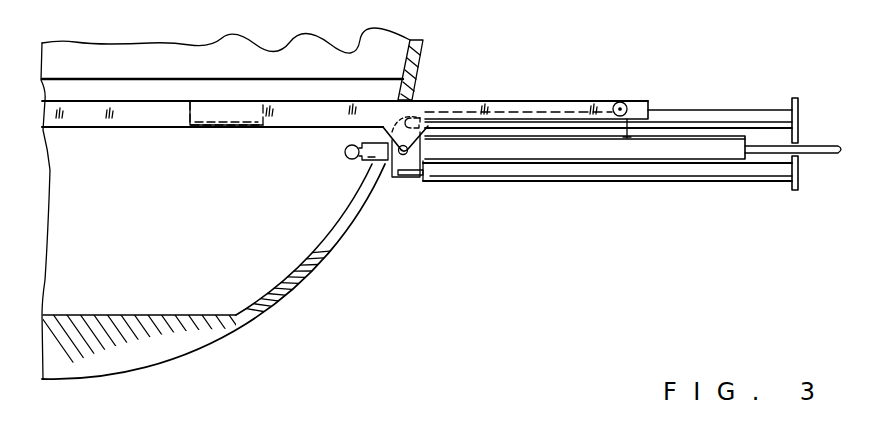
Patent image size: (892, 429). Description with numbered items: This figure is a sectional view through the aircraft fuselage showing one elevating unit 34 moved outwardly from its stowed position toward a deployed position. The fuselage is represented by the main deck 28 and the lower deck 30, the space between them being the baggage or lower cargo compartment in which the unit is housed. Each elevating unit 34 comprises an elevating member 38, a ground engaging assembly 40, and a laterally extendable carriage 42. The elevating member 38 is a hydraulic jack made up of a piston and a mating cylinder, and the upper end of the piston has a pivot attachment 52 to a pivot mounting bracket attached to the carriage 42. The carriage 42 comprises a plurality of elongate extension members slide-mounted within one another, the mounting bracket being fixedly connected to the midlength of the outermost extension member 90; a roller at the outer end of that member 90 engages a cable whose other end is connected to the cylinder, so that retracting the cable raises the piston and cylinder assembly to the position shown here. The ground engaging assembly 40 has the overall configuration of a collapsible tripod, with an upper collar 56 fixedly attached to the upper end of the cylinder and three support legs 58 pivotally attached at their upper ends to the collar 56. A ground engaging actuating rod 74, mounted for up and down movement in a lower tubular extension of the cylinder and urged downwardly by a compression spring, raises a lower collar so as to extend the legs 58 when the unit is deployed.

The main deck 28 is at (351, 62).
The lower deck 30 is at (165, 315).
The elevating unit 34 is at (607, 78).
The elevating member 38 is at (516, 152).
The ground engaging assembly 40 is at (713, 172).
The laterally extendable carriage 42 is at (395, 103).
The pivot attachment 52 is at (388, 133).
The upper collar 56 is at (389, 178).
The support legs 58 is at (730, 110).
The ground engaging actuating rod 74 is at (817, 154).
The outermost extension member 90 is at (147, 118).